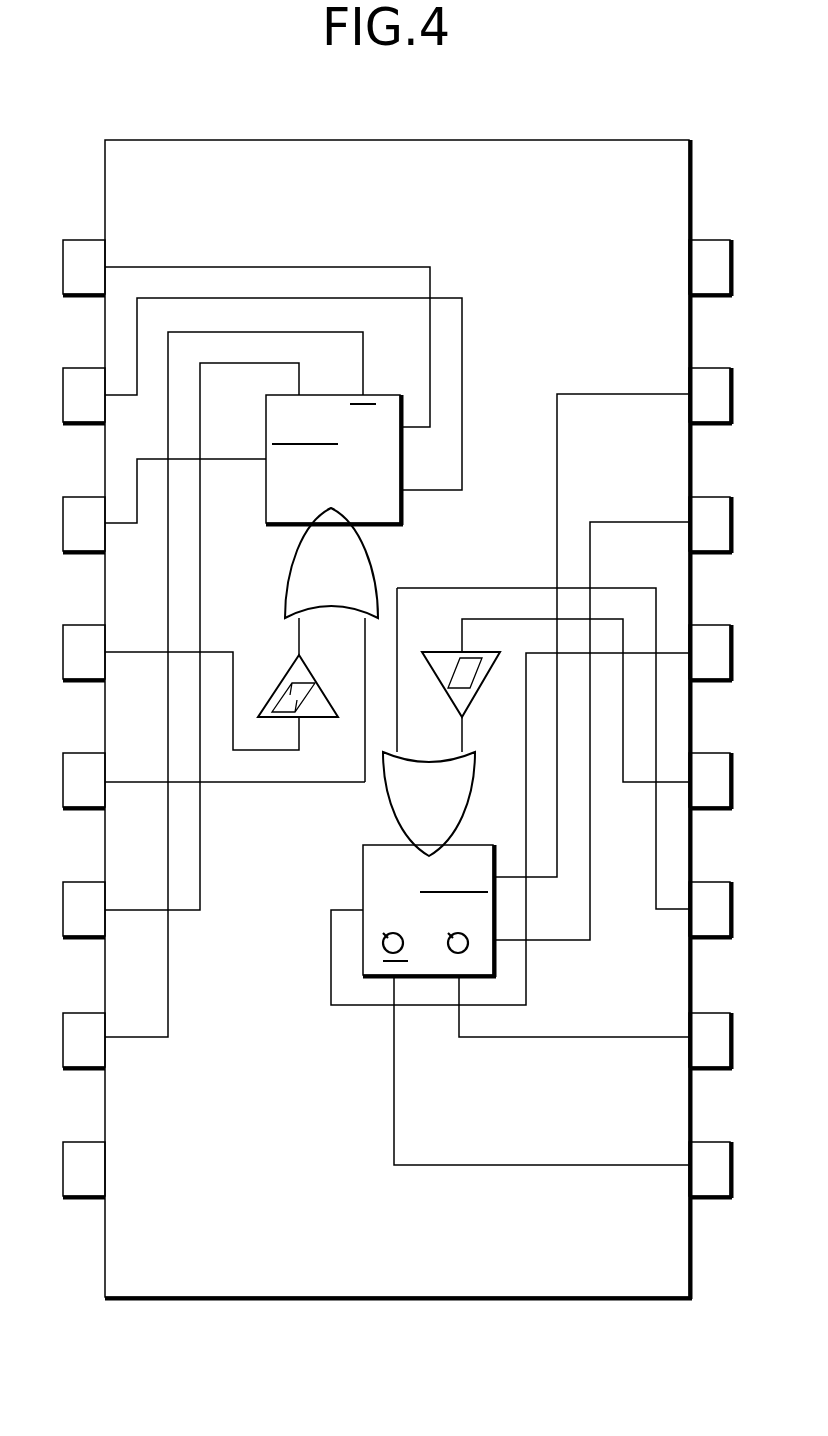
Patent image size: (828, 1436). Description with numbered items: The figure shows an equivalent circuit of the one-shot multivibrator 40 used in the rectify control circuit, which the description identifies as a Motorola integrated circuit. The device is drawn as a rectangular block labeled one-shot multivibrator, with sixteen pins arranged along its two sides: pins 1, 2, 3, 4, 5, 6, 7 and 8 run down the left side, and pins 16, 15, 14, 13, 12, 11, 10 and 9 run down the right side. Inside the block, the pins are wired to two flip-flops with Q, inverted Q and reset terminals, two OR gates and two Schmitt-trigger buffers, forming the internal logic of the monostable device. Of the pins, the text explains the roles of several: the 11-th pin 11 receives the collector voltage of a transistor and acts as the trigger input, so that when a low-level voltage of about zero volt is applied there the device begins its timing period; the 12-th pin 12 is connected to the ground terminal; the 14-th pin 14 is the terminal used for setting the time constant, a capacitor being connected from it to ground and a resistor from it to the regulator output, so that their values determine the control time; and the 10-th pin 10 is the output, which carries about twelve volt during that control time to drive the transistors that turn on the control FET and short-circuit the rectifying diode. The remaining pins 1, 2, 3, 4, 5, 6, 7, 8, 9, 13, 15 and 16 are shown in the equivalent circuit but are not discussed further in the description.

The one-shot multivibrator 40 is at (397, 754).
The first pin 1 is at (84, 268).
The second pin 2 is at (84, 396).
The third pin 3 is at (84, 525).
The fourth pin 4 is at (84, 653).
The fifth pin 5 is at (84, 781).
The sixth pin 6 is at (84, 910).
The seventh pin 7 is at (84, 1041).
The eighth pin 8 is at (84, 1170).
The ninth pin 9 is at (710, 1170).
The 10-th pin 10 is at (710, 1041).
The 11-th pin 11 is at (710, 910).
The 12-th pin 12 is at (710, 781).
The thirteenth pin 13 is at (710, 653).
The 14-th pin 14 is at (710, 525).
The fifteenth pin 15 is at (710, 396).
The sixteenth pin 16 is at (710, 268).